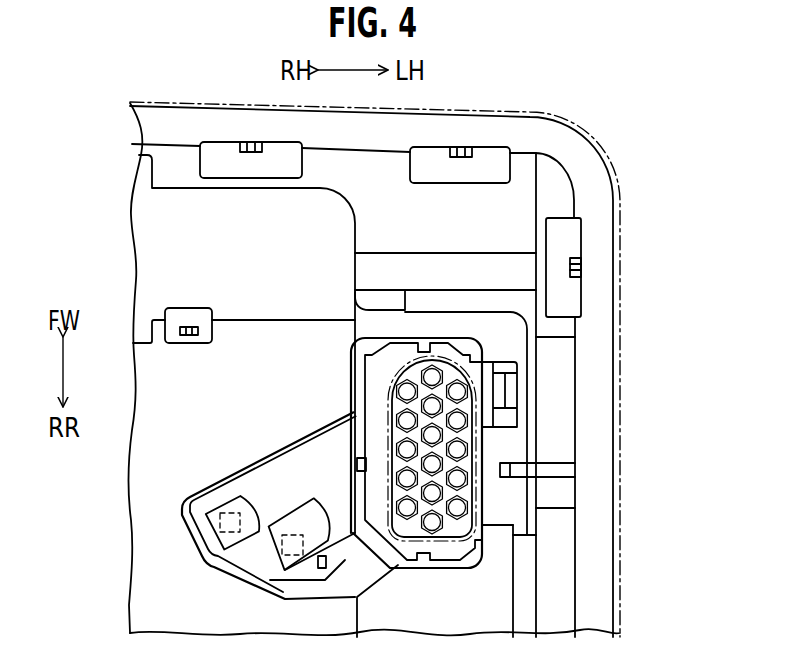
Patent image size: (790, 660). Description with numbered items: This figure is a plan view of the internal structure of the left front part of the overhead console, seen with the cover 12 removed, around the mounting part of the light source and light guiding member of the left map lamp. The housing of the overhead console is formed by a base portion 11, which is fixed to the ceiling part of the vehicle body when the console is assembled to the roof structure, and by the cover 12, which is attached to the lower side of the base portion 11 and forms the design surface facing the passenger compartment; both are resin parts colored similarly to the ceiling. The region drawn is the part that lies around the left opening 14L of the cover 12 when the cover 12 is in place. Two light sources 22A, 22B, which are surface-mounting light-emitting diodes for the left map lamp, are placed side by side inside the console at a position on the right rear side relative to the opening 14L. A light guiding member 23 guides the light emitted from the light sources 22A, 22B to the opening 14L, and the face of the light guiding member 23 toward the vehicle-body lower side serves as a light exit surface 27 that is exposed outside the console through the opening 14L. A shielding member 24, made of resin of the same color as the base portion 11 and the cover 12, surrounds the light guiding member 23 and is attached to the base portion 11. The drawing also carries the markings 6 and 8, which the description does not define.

The cross-section line (FIG. 6) 6 is at (153, 562).
The fastening portion (bolt) 8 is at (493, 445).
The base portion 11 is at (593, 240).
The cover 12 is at (622, 517).
The left opening 14L is at (412, 478).
The light source 22A is at (232, 515).
The light source 22B is at (290, 535).
The light guiding member 23 is at (303, 475).
The shielding member 24 is at (375, 580).
The light exit surface 27 is at (393, 397).